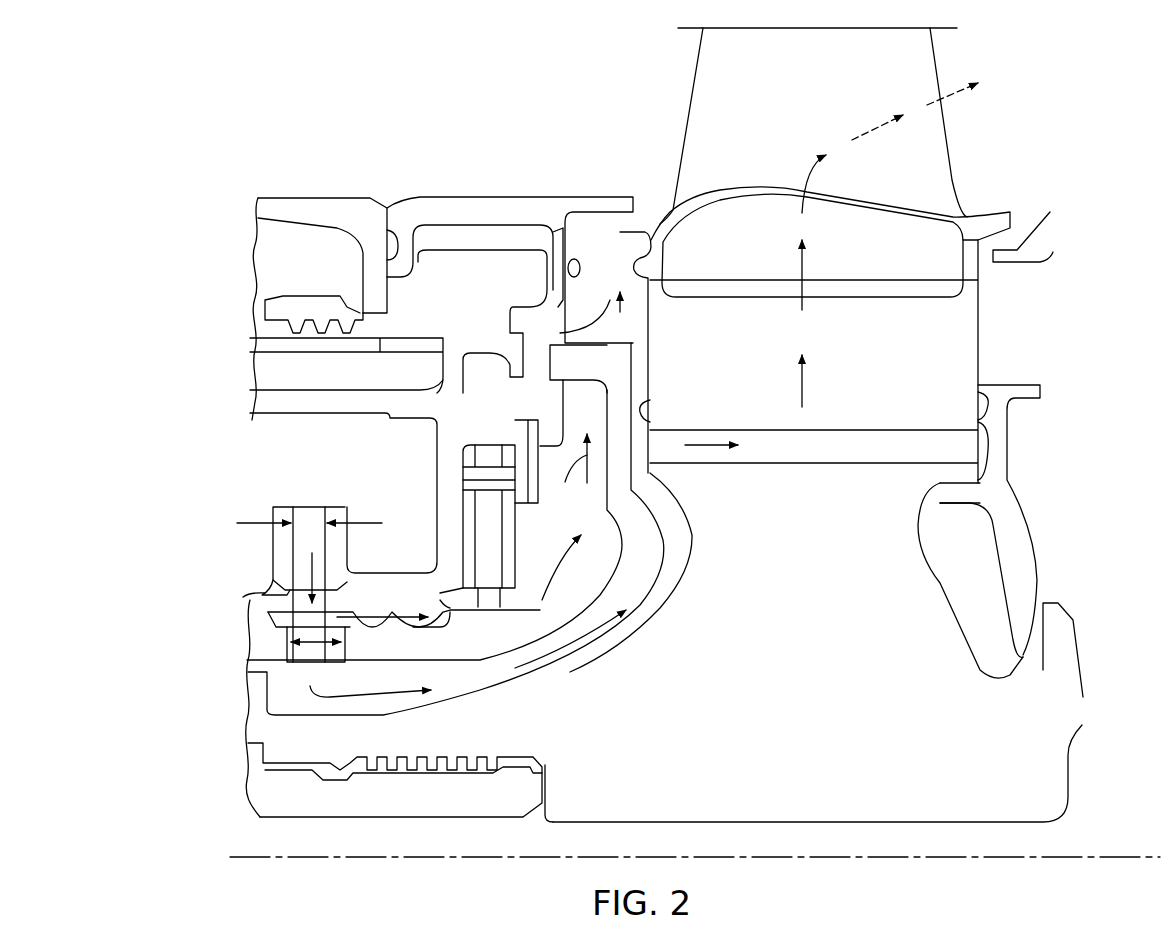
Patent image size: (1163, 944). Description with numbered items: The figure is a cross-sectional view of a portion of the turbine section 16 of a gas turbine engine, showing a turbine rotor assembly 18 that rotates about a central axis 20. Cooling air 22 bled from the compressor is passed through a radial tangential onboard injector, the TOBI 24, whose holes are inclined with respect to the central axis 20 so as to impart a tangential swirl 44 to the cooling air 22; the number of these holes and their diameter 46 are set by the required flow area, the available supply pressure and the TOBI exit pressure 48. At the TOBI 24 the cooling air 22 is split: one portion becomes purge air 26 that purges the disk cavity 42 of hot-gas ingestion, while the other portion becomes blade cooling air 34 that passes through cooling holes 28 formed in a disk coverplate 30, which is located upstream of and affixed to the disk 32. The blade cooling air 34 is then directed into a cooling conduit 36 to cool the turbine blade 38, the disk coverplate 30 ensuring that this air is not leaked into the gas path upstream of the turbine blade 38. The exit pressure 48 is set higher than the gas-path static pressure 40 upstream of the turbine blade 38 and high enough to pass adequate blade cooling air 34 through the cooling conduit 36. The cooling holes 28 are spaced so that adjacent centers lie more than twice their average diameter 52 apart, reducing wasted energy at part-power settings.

The turbine section 16 is at (1036, 156).
The turbine rotor assembly 18 is at (882, 615).
The central axis 20 is at (1098, 856).
The cooling air 22 is at (306, 490).
The radial tangential onboard injector (TOBI) 24 is at (273, 510).
The purge air 26 is at (587, 386).
The cooling holes 28 is at (292, 650).
The disk coverplate 30 is at (262, 607).
The disk 32 is at (751, 714).
The blade cooling air 34 is at (805, 392).
The cooling conduit 36 is at (550, 675).
The turbine blade 38 is at (820, 96).
The gas-path static pressure (P_g_hub) 40 is at (608, 236).
The disk cavity 42 is at (560, 556).
The tangential swirl 44 is at (315, 565).
The diameter 46 is at (318, 513).
The TOBI exit pressure (P_exit) 48 is at (290, 598).
The diameter of cooling holes 52 is at (318, 643).